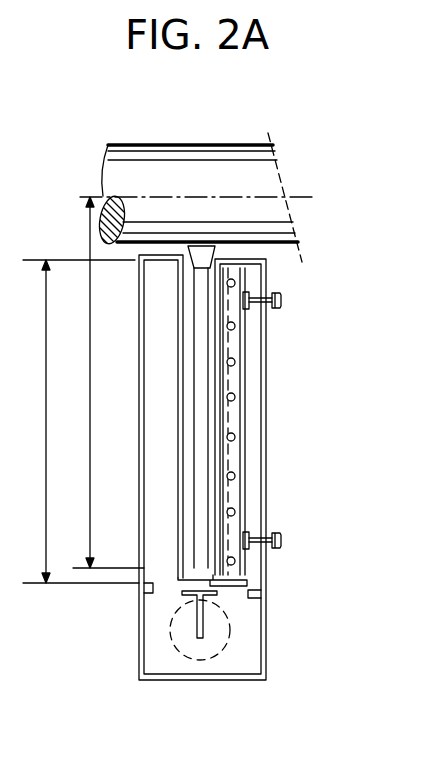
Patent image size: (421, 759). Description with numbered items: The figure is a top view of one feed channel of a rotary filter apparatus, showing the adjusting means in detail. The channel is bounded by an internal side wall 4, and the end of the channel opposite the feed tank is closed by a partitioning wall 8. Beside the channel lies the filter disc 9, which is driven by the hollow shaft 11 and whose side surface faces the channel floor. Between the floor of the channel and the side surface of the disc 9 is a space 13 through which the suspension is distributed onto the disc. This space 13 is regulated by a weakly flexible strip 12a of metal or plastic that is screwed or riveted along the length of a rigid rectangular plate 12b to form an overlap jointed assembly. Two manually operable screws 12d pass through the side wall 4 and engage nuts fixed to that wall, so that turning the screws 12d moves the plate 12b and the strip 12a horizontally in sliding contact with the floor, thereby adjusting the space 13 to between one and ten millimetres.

The internal side wall 4 is at (266, 487).
The partitioning wall 8 is at (243, 262).
The disc 9 is at (203, 552).
The hollow shaft 11 is at (153, 157).
The weakly flexible strip 12a is at (235, 418).
The rigid rectangular plate 12b is at (245, 372).
The manually operable screw 12d is at (282, 300).
The space 13 is at (213, 545).